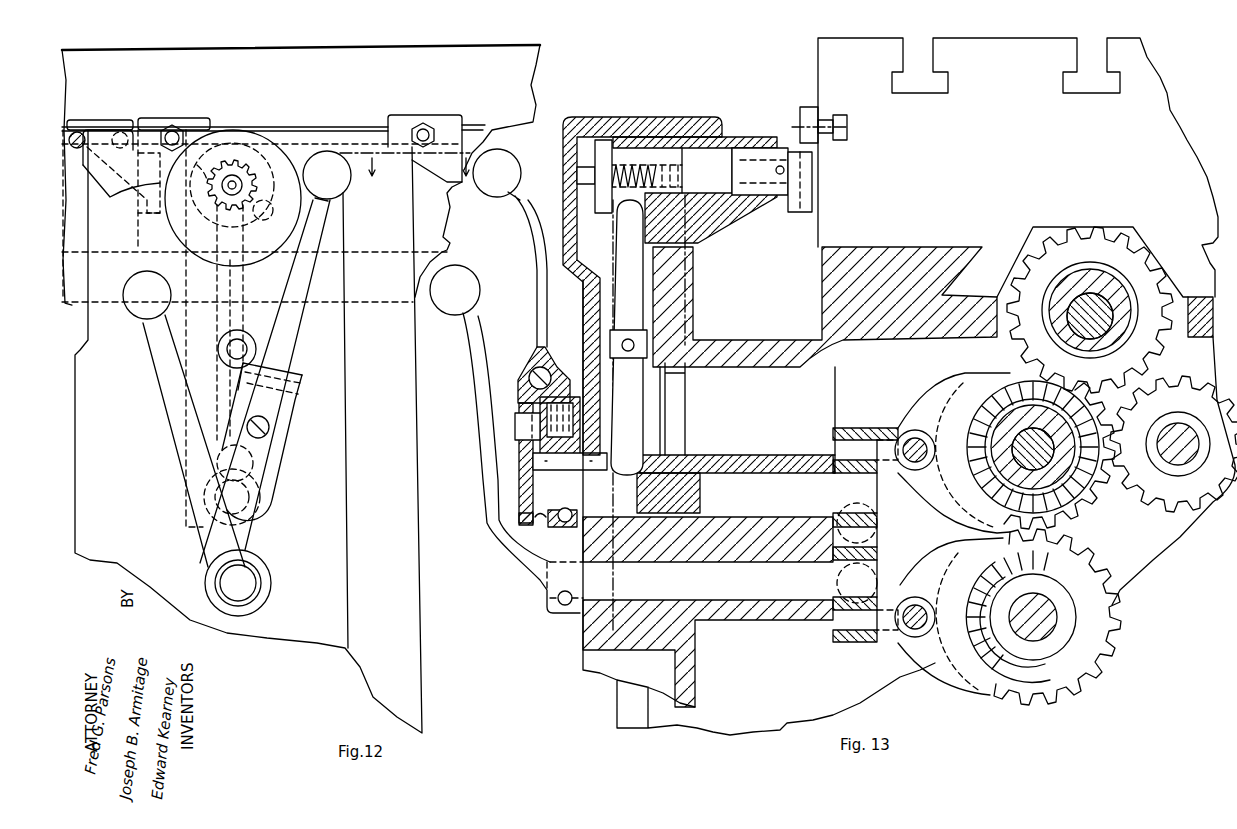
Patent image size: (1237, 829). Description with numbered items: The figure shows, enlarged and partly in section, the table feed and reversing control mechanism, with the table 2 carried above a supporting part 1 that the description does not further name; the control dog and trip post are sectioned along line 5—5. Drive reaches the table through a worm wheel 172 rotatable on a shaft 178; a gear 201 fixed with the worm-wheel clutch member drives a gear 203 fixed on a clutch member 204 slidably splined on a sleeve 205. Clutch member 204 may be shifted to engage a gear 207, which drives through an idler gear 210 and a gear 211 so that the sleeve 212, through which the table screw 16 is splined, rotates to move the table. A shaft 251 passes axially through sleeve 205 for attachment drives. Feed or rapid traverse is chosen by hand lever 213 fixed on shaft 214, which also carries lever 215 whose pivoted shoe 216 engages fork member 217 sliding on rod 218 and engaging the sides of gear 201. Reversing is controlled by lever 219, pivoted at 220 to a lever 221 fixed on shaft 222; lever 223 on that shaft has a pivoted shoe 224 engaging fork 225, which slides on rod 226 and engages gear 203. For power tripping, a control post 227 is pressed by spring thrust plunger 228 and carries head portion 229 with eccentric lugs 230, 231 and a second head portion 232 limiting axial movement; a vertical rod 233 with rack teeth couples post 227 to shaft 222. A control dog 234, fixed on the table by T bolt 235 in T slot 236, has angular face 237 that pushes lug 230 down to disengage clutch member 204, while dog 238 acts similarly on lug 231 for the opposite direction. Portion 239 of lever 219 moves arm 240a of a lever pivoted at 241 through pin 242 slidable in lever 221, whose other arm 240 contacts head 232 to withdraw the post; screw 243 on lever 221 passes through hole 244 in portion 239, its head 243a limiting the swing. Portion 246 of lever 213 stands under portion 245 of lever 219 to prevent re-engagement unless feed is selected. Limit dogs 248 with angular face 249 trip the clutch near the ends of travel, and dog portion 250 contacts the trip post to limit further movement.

In FIG. 12, the frame 1 is at (420, 713).
In FIG. 13, the frame 1 is at (823, 308).
In FIG. 12, the table 2 is at (230, 57).
In FIG. 13, the table 2 is at (845, 45).
In FIG. 12, the section line 5 is at (406, 156).
In FIG. 13, the table screw 16 is at (1118, 300).
In FIG. 13, the worm wheel 172 is at (1083, 687).
In FIG. 13, the shaft 178 is at (1030, 637).
In FIG. 13, the gear 201 is at (983, 540).
In FIG. 13, the gear 203 is at (1042, 580).
In FIG. 13, the clutch member 204 is at (977, 482).
In FIG. 13, the sleeve 205 is at (1090, 492).
In FIG. 13, the gear 207 is at (1087, 513).
In FIG. 13, the idler gear 210 is at (1177, 384).
In FIG. 13, the gear 211 is at (1093, 240).
In FIG. 13, the sleeve 212 is at (1063, 297).
In FIG. 12, the hand lever 213 is at (165, 390).
In FIG. 13, the shaft 214 is at (763, 598).
In FIG. 13, the lever 215 is at (840, 645).
In FIG. 13, the pivoted shoe 216 is at (837, 621).
In FIG. 13, the fork member 217 is at (953, 680).
In FIG. 13, the rod 218 is at (915, 632).
In FIG. 12, the lever 219 is at (322, 237).
In FIG. 12, the pivot 220 is at (298, 397).
In FIG. 12, the lever 221 is at (274, 487).
In FIG. 13, the lever 221 is at (616, 445).
In FIG. 13, the shaft 222 is at (745, 477).
In FIG. 13, the lever 223 is at (846, 430).
In FIG. 13, the pivoted shoe 224 is at (898, 427).
In FIG. 13, the fork 225 is at (950, 383).
In FIG. 13, the rod 226 is at (915, 430).
In FIG. 12, the control post 227 is at (243, 160).
In FIG. 13, the control post 227 is at (728, 147).
In FIG. 13, the spring thrust plunger 228 is at (583, 170).
In FIG. 13, the head portion 229 is at (817, 152).
In FIG. 12, the eccentric lug portion 230 is at (197, 180).
In FIG. 12, the eccentric lug portion 231 is at (265, 180).
In FIG. 13, the eccentric lug portion 231 is at (812, 212).
In FIG. 13, the head portion 232 is at (566, 188).
In FIG. 12, the vertical rod 233 is at (187, 328).
In FIG. 13, the vertical rod 233 is at (686, 408).
In FIG. 12, the control dog 234 is at (196, 124).
In FIG. 12, the T bolt 235 is at (171, 123).
In FIG. 12, the T slot 236 is at (482, 126).
In FIG. 12, the angular face portion 237 is at (214, 196).
In FIG. 12, the table dog 238 is at (440, 115).
In FIG. 12, the lever portion 239 is at (520, 477).
In FIG. 13, the arm 240 is at (600, 210).
In FIG. 13, the arm 240a is at (628, 458).
In FIG. 13, the pivot 241 is at (637, 362).
In FIG. 12, the pin 242 is at (535, 462).
In FIG. 12, the screw 243 is at (270, 432).
In FIG. 12, the screw head 243a is at (517, 413).
In FIG. 12, the hole 244 is at (515, 425).
In FIG. 12, the lever portion 245 is at (247, 530).
In FIG. 12, the lever portion 246 is at (207, 553).
In FIG. 12, the dog 248 is at (88, 123).
In FIG. 12, the angular face 249 is at (120, 196).
In FIG. 12, the dog portion 250 is at (160, 195).
In FIG. 13, the shaft 251 is at (1042, 437).